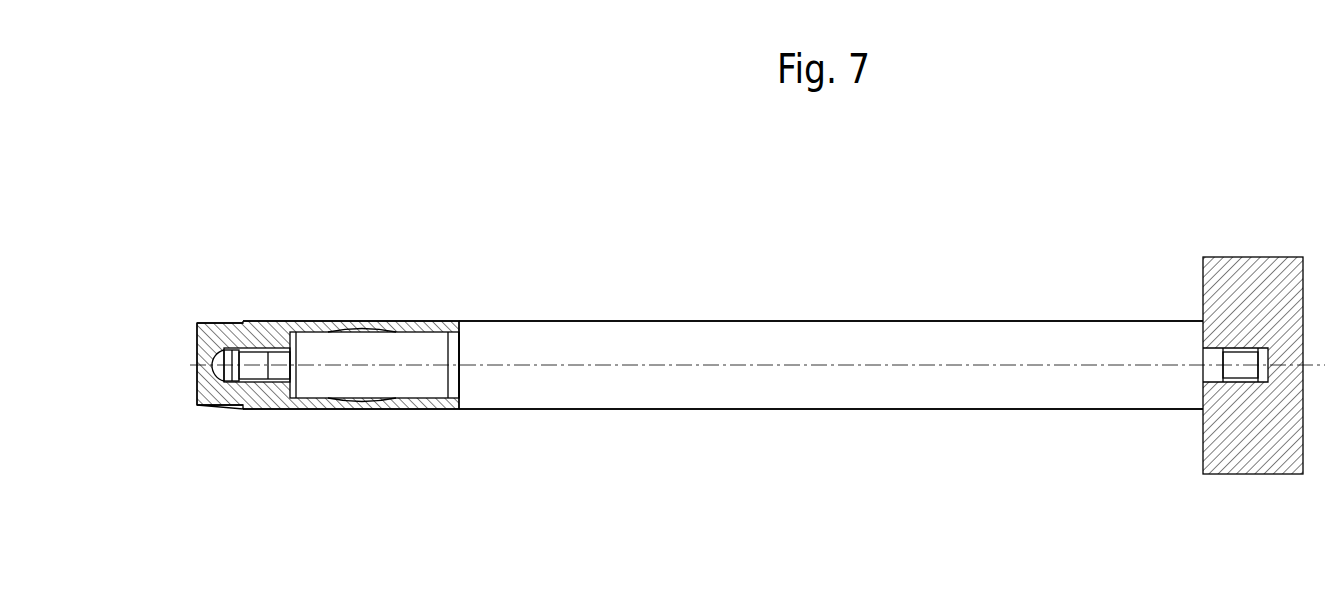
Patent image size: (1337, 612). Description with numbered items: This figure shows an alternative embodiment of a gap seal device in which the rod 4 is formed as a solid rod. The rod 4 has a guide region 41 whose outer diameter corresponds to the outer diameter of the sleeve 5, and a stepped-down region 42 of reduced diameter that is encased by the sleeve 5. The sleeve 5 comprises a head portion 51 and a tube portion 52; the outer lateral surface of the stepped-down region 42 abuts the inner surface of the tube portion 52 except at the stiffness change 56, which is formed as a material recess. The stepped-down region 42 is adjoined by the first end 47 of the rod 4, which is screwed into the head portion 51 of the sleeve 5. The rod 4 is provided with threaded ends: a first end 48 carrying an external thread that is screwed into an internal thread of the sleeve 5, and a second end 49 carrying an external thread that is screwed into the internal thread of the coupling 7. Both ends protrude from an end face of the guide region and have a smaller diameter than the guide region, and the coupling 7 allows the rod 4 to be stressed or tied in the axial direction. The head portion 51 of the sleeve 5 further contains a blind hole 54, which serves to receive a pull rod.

The rod 4 is at (636, 313).
The sleeve 5 is at (252, 416).
The coupling 7 is at (1270, 239).
The guide region 41 is at (574, 395).
The stepped-down region 42 is at (415, 380).
The first end 47 is at (457, 322).
The first end 48 is at (255, 358).
The second end 49 is at (1243, 370).
The head portion 51 is at (210, 407).
The tube portion 52 is at (453, 402).
The blind hole 54 is at (213, 378).
The stiffness change 56 is at (363, 408).